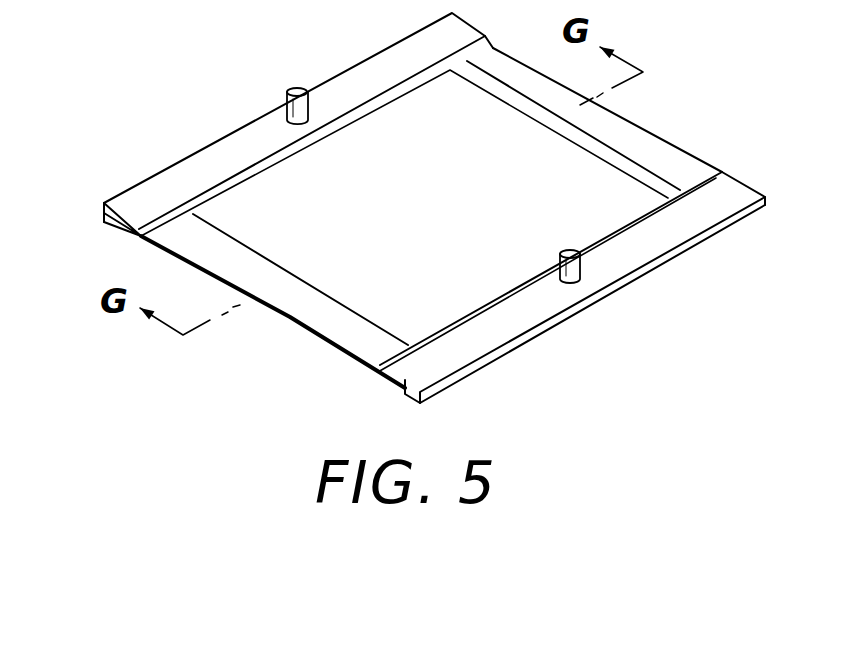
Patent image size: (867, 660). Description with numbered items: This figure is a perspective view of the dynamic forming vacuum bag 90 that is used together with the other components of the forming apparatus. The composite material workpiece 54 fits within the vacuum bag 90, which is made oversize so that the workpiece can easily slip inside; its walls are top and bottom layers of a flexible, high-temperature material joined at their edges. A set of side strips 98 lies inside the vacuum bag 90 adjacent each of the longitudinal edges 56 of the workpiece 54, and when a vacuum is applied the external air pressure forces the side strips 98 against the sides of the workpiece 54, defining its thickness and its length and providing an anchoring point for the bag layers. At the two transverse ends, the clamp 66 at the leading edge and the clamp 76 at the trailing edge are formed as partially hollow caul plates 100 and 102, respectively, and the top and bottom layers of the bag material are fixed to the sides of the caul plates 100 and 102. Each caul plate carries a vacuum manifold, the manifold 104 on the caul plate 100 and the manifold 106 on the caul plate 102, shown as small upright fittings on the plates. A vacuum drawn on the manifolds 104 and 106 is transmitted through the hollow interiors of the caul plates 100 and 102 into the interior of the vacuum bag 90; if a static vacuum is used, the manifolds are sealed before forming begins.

The vacuum bag 90 is at (137, 150).
The clamp 76 is at (236, 120).
The caul plate 102 is at (363, 63).
The composite material workpiece 54 is at (534, 183).
The caul plate 100 is at (663, 257).
The clamp 66 is at (527, 342).
The side strips 98 is at (220, 235).
The longitudinal edges 56 is at (327, 276).
The vacuum manifold 106 is at (287, 90).
The vacuum manifold 104 is at (580, 270).